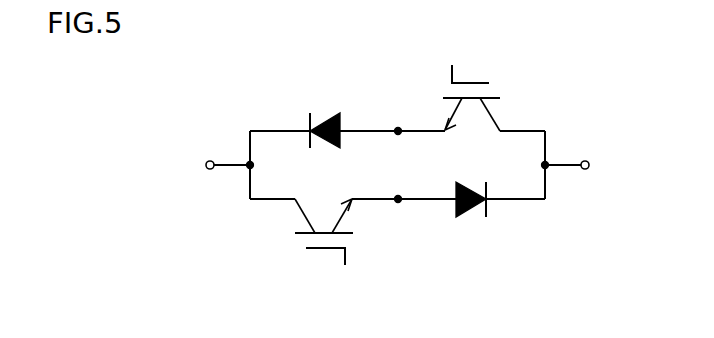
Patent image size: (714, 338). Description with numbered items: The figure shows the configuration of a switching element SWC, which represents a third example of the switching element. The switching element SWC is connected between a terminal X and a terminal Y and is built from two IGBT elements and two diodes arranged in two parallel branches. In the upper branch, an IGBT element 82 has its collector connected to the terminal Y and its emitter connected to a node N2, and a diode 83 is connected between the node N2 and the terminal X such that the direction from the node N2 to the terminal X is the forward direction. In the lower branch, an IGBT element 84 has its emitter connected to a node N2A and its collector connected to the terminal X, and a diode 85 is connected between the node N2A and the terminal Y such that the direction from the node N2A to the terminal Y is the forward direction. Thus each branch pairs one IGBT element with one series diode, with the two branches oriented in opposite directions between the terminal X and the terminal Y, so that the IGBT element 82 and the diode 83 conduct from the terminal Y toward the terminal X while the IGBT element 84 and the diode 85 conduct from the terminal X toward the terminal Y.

The switching element SWC is at (226, 82).
The IGBT element 82 is at (469, 79).
The diode 83 is at (323, 113).
The IGBT element 84 is at (325, 256).
The diode 85 is at (476, 213).
The node N2 is at (398, 126).
The node N2A is at (398, 205).
The terminal X is at (216, 165).
The terminal Y is at (578, 165).